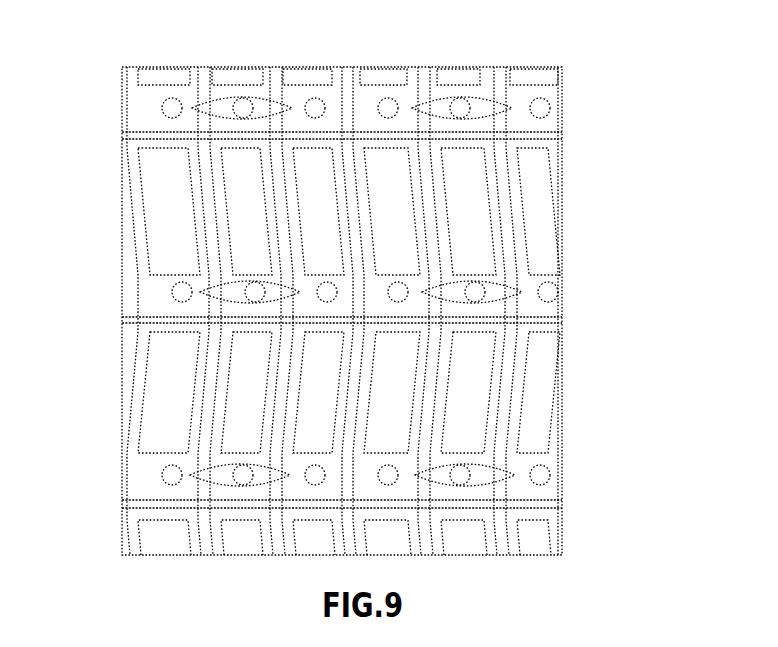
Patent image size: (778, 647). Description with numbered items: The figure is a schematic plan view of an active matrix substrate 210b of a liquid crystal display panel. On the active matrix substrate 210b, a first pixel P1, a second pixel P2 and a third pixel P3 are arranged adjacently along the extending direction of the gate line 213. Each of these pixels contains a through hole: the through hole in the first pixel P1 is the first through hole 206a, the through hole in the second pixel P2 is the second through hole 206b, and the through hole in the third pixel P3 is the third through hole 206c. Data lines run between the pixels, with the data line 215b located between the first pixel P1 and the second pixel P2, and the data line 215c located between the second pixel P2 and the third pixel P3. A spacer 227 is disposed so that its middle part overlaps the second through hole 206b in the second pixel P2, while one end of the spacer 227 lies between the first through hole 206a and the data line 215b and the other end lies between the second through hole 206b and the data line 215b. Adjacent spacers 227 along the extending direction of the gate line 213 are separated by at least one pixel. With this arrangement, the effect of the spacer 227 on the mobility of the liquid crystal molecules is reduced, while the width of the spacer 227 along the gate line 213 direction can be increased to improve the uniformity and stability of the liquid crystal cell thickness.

The first pixel P1 is at (172, 197).
The second pixel P2 is at (257, 200).
The third pixel P3 is at (310, 205).
The spacer 227 is at (233, 280).
The first through hole 206a is at (180, 290).
The second through hole 206b is at (255, 292).
The third through hole 206c is at (327, 292).
The data line 215b is at (212, 387).
The data line 215c is at (278, 378).
The active matrix substrate 210b is at (578, 218).
The gate line 213 is at (520, 320).